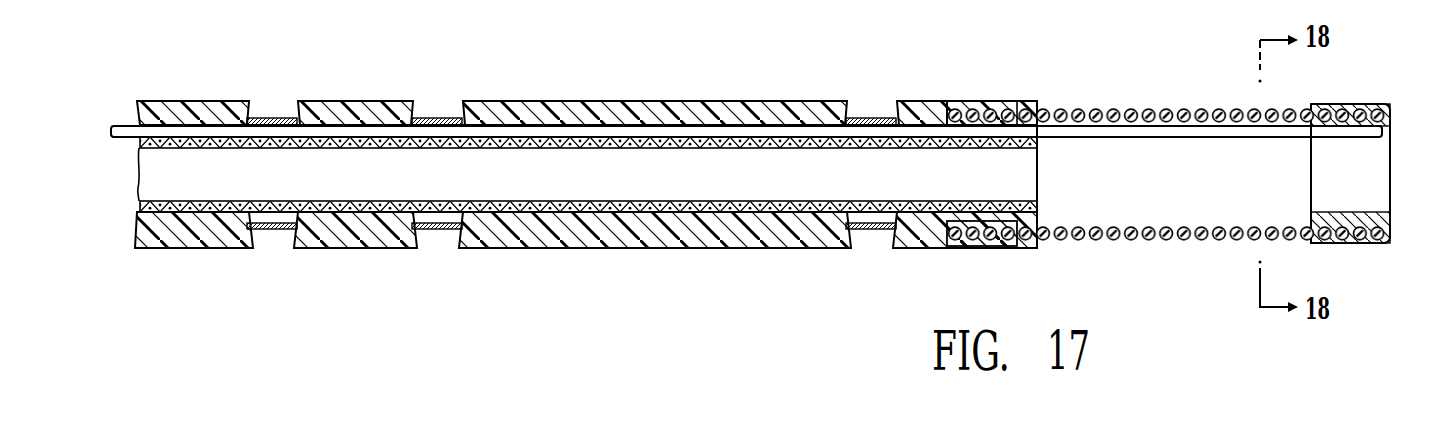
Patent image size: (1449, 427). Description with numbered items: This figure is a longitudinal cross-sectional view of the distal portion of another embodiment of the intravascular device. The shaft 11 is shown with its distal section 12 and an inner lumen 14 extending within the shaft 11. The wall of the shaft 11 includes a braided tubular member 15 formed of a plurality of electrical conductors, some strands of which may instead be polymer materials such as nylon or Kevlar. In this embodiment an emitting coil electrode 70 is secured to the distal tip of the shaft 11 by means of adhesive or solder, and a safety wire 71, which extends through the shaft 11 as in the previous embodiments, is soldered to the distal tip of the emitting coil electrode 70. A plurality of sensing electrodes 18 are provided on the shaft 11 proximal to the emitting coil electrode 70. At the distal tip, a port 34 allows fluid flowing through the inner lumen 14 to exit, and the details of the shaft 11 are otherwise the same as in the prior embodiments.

The shaft 11 is at (193, 248).
The distal section 12 is at (728, 102).
The inner lumen 14 is at (588, 197).
The braided tubular member 15 is at (566, 140).
The sensing electrodes 18 is at (278, 118).
The port 34 is at (1373, 177).
The emitting coil electrode 70 is at (1097, 110).
The safety wire 71 is at (123, 126).